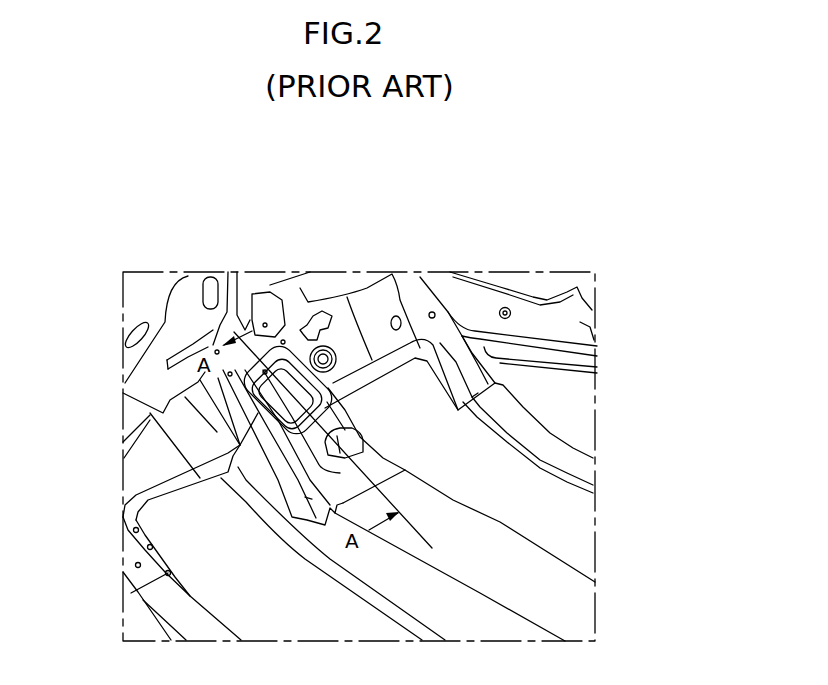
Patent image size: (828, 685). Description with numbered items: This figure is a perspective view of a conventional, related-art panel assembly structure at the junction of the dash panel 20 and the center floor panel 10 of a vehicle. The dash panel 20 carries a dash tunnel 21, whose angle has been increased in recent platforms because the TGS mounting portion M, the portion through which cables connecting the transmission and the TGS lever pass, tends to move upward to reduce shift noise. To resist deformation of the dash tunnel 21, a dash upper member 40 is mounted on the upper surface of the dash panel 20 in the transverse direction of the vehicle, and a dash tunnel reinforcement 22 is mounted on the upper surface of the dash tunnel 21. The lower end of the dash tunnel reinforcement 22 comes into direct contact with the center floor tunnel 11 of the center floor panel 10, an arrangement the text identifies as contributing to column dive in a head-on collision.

The dash panel 20 is at (183, 320).
The TGS mounting portion M is at (275, 392).
The dash tunnel 21 is at (300, 420).
The dash tunnel reinforcement 22 is at (328, 422).
The center floor panel 10 is at (538, 496).
The center floor tunnel 11 is at (518, 575).
The dash upper member 40 is at (160, 452).